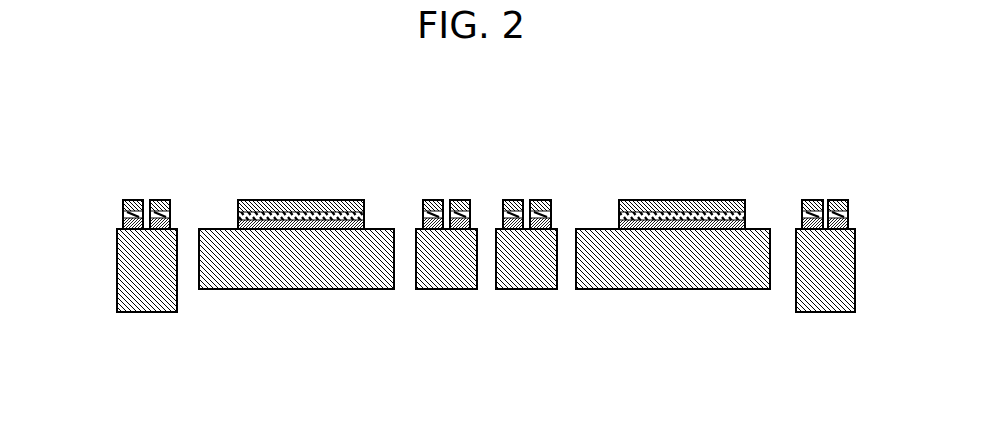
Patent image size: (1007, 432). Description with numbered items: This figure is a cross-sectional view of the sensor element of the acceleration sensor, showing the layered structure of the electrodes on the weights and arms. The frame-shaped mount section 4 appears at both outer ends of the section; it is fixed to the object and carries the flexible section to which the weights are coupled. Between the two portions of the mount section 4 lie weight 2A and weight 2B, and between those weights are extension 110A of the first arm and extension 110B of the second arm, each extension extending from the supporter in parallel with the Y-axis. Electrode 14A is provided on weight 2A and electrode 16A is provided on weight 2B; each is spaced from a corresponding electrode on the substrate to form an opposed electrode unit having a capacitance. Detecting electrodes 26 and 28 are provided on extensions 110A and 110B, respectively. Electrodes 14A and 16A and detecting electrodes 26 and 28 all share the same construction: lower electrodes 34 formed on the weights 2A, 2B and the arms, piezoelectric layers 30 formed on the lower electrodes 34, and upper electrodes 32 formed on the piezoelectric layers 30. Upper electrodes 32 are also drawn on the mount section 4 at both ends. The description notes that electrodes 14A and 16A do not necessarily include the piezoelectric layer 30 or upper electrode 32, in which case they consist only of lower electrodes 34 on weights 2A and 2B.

The weight 2A is at (277, 281).
The weight 2B is at (683, 283).
The mount section 4 is at (128, 302).
The electrode 14A is at (233, 178).
The electrode 16A is at (615, 178).
The detecting electrode 26 is at (472, 137).
The detecting electrode 28 is at (557, 137).
The piezoelectric layer 30 is at (422, 213).
The upper electrode 32 is at (133, 201).
The lower electrode 34 is at (137, 235).
The extension 110A is at (423, 278).
The extension 110B is at (553, 289).